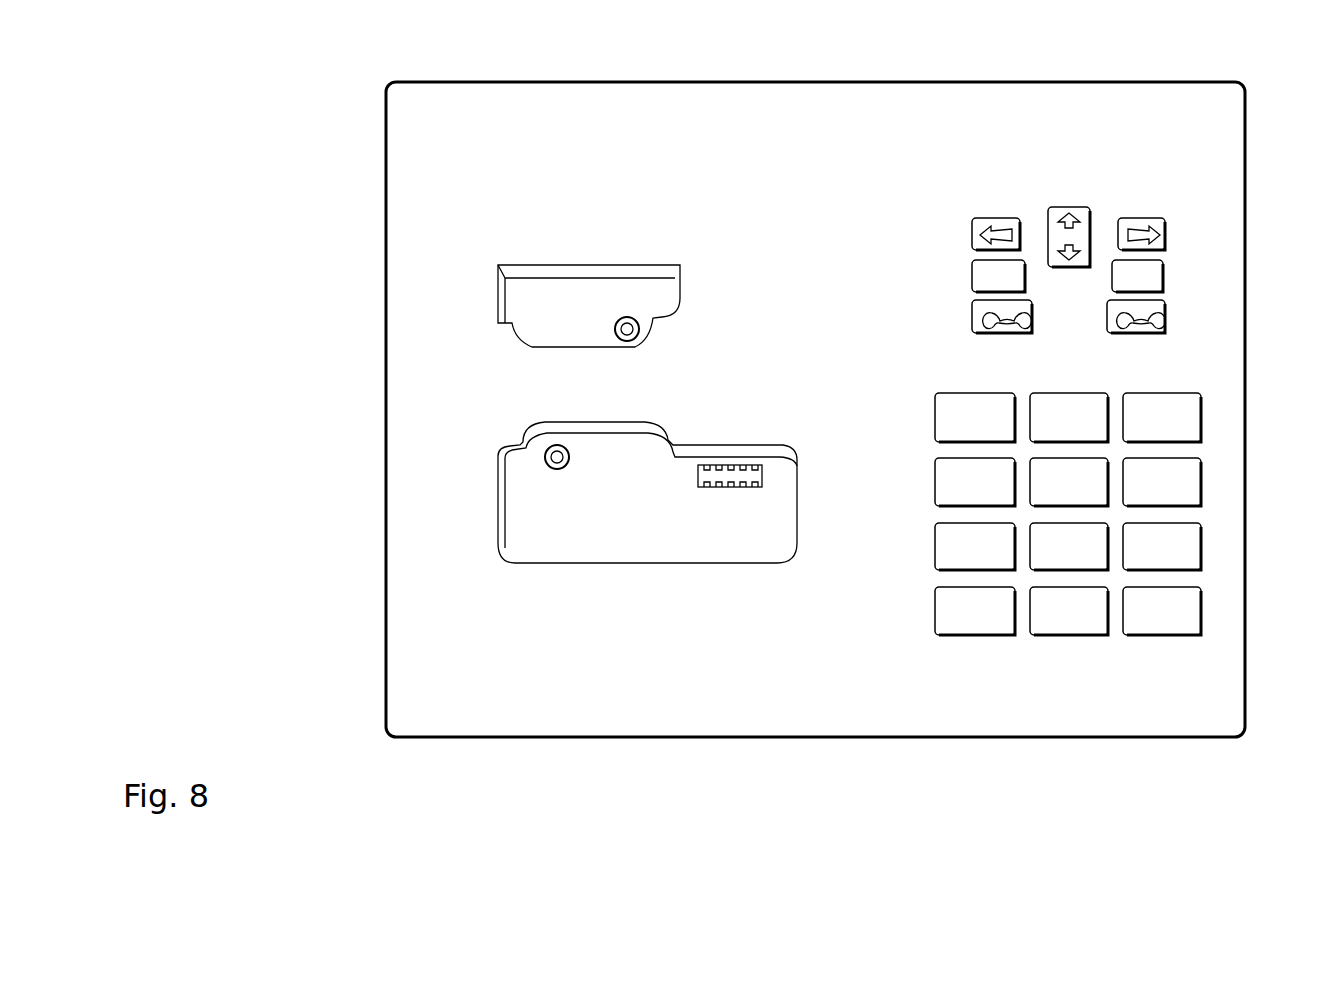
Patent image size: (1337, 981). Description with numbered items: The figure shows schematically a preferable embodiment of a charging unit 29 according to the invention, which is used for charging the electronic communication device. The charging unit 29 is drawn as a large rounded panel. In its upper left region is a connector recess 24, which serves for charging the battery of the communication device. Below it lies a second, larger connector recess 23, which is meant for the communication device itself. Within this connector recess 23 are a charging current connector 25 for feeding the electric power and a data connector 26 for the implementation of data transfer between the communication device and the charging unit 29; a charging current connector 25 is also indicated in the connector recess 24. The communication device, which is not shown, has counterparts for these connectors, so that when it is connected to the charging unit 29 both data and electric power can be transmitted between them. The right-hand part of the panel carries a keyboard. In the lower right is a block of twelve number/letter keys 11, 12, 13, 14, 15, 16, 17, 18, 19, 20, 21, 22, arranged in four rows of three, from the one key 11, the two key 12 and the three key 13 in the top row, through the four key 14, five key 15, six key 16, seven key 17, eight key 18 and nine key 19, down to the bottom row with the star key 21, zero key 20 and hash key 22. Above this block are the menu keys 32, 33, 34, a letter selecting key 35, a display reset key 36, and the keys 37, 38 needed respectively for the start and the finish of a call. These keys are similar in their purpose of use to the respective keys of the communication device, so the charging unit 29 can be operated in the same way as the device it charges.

The number/letter key 11 is at (935, 433).
The number/letter key 12 is at (1087, 397).
The number/letter key 13 is at (1193, 397).
The number/letter key 14 is at (935, 488).
The number/letter key 15 is at (1093, 465).
The number/letter key 16 is at (1186, 492).
The number/letter key 17 is at (935, 545).
The number/letter key 18 is at (1087, 527).
The number/letter key 19 is at (1193, 563).
The number/letter key 20 is at (1087, 592).
The number/letter key 21 is at (940, 602).
The number/letter key 22 is at (1188, 626).
The connector recess 23 is at (538, 540).
The connector recess 24 is at (540, 292).
The charging current connector 25 is at (616, 327).
The data connector 26 is at (722, 488).
The charging unit 29 is at (1192, 766).
The menu key 32 is at (1051, 207).
The menu key 33 is at (977, 218).
The menu key 34 is at (1121, 218).
The letter selecting key 35 is at (1165, 270).
The display reset key 36 is at (972, 275).
The call start key 37 is at (972, 310).
The call finish key 38 is at (1166, 327).